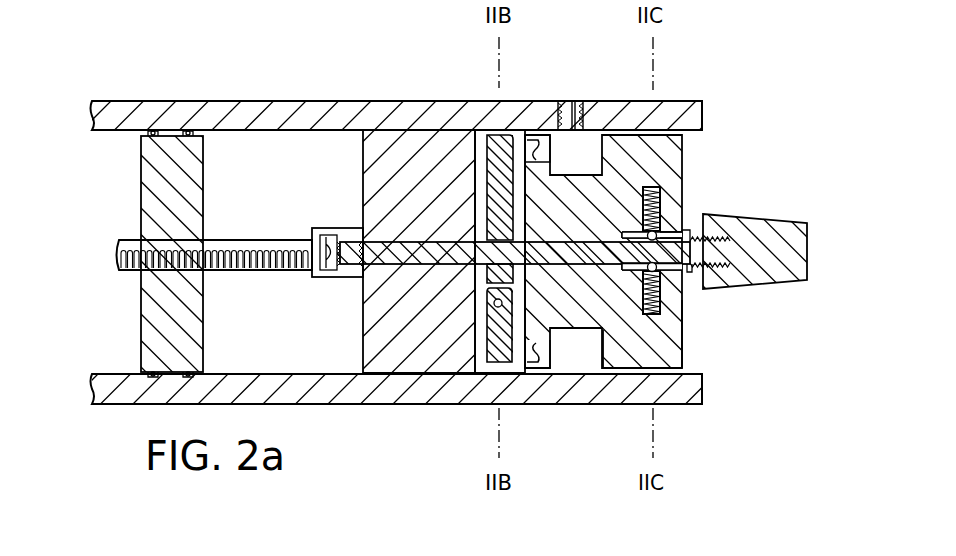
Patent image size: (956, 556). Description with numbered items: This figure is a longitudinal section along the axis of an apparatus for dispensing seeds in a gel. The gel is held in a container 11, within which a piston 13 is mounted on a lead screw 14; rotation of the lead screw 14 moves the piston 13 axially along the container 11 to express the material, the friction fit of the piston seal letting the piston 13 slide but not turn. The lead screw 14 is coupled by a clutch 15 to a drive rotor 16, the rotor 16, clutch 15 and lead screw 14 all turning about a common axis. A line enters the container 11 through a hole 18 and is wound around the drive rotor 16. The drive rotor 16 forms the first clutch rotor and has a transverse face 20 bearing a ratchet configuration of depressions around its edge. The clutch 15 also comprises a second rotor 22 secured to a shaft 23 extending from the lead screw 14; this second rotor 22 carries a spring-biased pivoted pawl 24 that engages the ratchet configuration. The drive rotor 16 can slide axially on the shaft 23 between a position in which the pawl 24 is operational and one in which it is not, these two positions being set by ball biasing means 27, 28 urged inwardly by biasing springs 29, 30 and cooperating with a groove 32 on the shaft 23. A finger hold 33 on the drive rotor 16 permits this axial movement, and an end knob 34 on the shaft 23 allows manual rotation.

The container 11 is at (218, 101).
The piston 13 is at (195, 317).
The lead screw 14 is at (290, 270).
The clutch 15 is at (573, 404).
The drive rotor 16 is at (635, 155).
The hole 18 is at (578, 105).
The transverse face 20 is at (525, 150).
The second rotor 22 is at (490, 140).
The shaft 23 is at (420, 257).
The pawl 24 is at (490, 353).
The ball biasing means 27 is at (665, 213).
The ball biasing means 28 is at (665, 290).
The biasing spring 29 is at (685, 352).
The biasing spring 30 is at (657, 188).
The groove 32 is at (695, 267).
The finger hold 33 is at (666, 357).
The end knob 34 is at (766, 236).